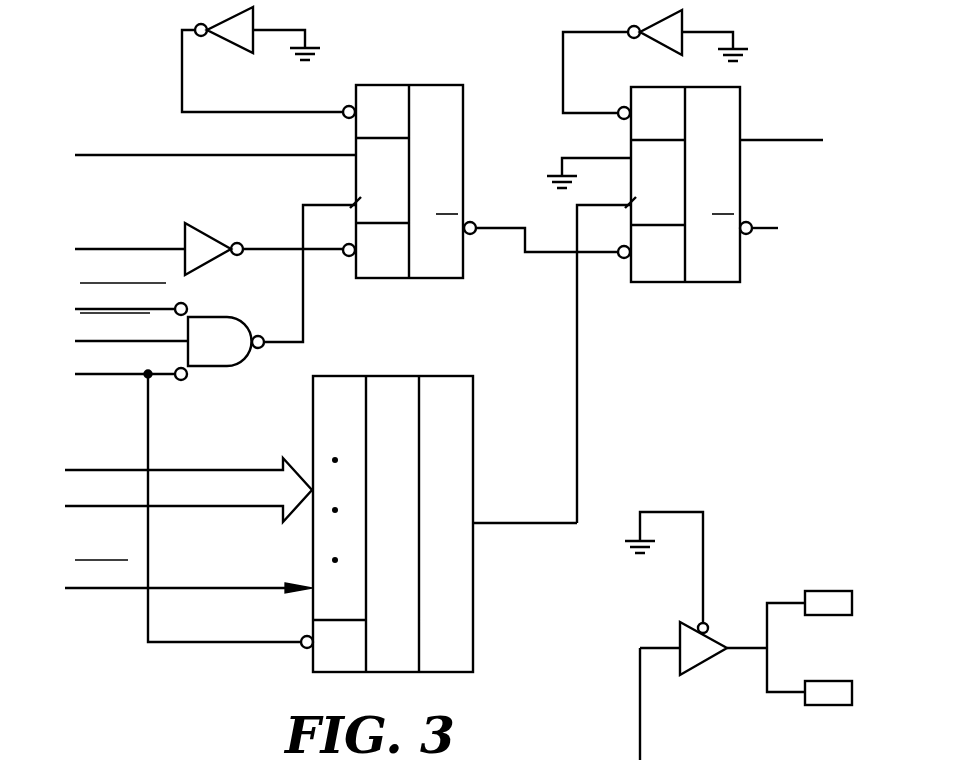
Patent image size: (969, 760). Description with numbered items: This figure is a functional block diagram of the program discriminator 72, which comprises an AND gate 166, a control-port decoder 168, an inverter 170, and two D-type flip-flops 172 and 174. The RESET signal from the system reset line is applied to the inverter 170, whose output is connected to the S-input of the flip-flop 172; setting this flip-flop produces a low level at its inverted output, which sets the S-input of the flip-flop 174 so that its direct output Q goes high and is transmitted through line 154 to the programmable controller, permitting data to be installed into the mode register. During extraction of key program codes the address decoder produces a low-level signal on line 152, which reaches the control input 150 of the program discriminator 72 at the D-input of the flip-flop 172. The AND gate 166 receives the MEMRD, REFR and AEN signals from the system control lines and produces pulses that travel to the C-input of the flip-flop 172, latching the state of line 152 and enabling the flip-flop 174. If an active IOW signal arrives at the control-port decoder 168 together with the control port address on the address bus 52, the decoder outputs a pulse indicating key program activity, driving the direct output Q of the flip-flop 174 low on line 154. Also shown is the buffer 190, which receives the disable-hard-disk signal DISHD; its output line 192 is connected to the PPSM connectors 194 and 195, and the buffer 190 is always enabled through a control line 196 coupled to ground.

The address bus 52 is at (130, 470).
The program discriminator 72 is at (712, 330).
The control input 150 is at (350, 154).
The line 152 is at (150, 153).
The line 154 is at (778, 142).
The AND gate 166 is at (212, 367).
The control-port decoder 168 is at (338, 376).
The inverter 170 is at (204, 222).
The D-type flip-flop 172 is at (463, 162).
The D-type flip-flop 174 is at (742, 113).
The buffer 190 is at (705, 663).
The output line 192 is at (743, 645).
The PPSM connector 194 is at (827, 590).
The PPSM connector 195 is at (827, 705).
The control line 196 is at (705, 540).